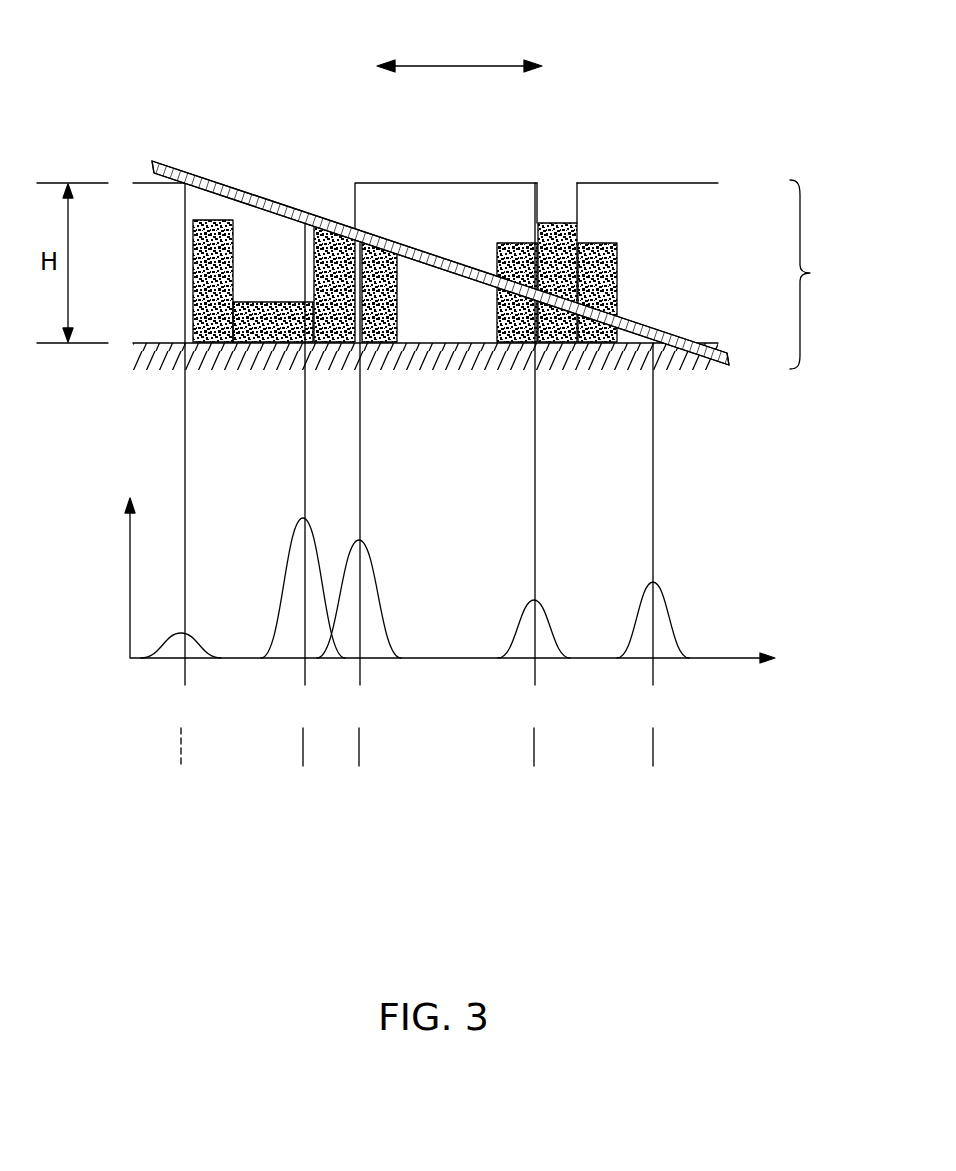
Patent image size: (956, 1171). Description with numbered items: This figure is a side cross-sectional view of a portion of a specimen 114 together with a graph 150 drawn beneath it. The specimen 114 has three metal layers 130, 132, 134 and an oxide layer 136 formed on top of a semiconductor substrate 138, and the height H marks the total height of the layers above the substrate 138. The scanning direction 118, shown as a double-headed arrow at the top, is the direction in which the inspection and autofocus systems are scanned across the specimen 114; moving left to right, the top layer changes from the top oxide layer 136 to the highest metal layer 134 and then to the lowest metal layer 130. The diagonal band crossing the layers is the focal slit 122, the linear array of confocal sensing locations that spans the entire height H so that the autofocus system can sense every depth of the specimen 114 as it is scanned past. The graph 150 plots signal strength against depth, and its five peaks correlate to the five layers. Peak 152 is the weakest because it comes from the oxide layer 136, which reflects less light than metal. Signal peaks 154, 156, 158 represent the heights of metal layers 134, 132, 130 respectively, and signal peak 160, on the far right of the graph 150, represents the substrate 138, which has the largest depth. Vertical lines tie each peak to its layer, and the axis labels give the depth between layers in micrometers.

The specimen 114 is at (828, 274).
The scanning direction 118 is at (483, 64).
The focal slit 122 is at (228, 184).
The metal layer 130 is at (276, 301).
The metal layer 132 is at (618, 296).
The metal layer 134 is at (561, 222).
The oxide layer 136 is at (627, 183).
The semiconductor substrate 138 is at (163, 341).
The graph 150 is at (732, 488).
The peak 152 is at (182, 612).
The signal peak 154 is at (303, 503).
The signal peak 156 is at (368, 522).
The signal peak 158 is at (538, 585).
The signal peak 160 is at (664, 564).